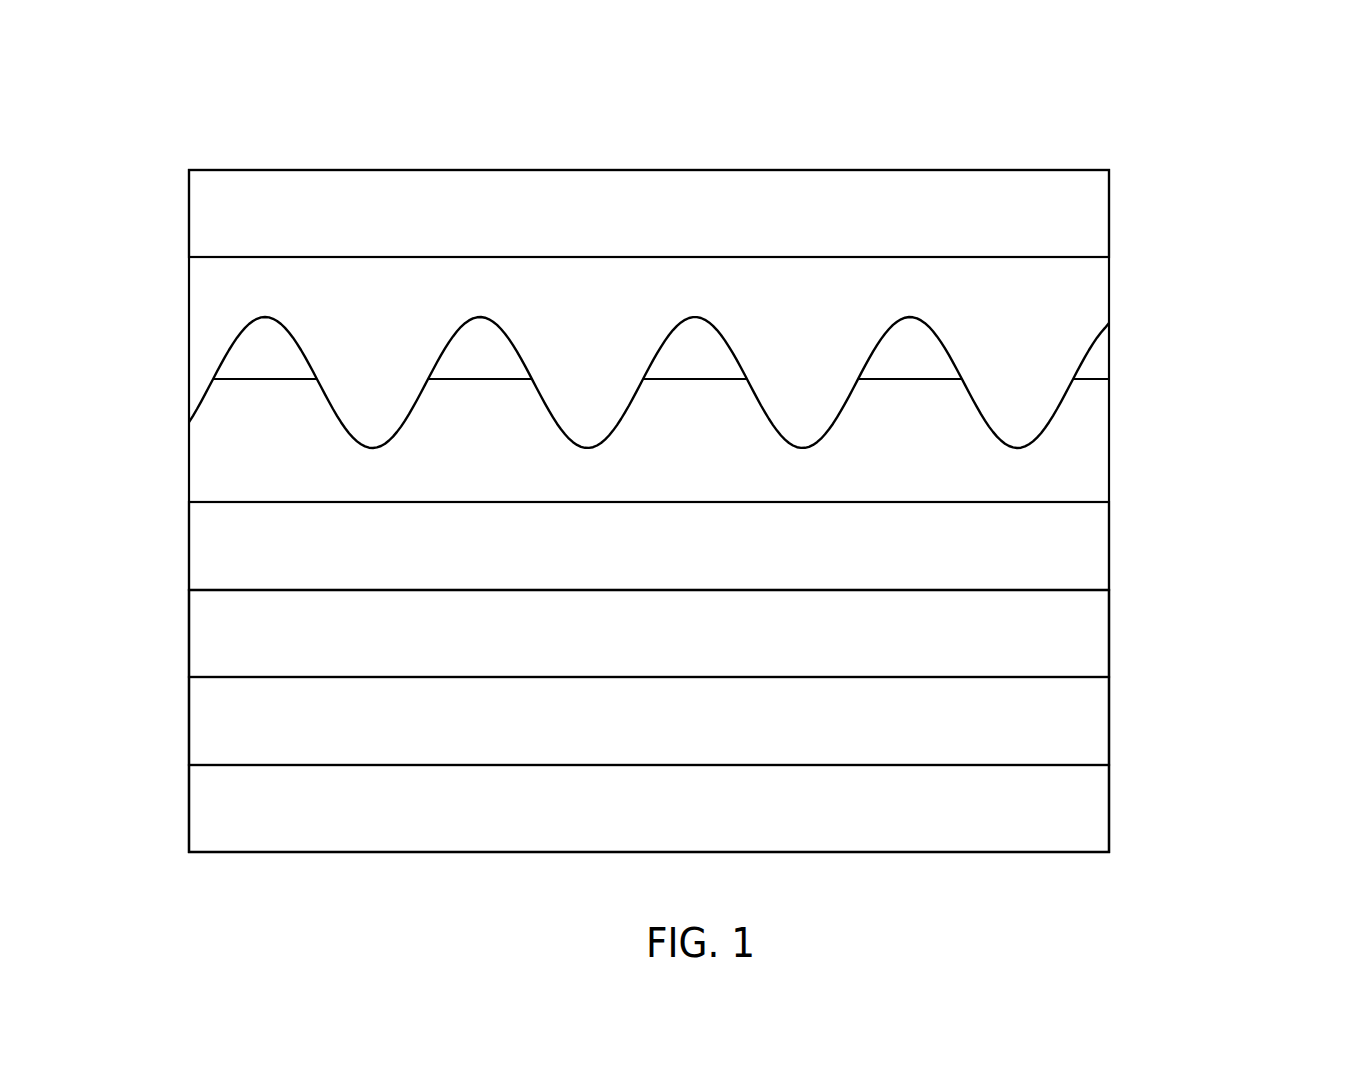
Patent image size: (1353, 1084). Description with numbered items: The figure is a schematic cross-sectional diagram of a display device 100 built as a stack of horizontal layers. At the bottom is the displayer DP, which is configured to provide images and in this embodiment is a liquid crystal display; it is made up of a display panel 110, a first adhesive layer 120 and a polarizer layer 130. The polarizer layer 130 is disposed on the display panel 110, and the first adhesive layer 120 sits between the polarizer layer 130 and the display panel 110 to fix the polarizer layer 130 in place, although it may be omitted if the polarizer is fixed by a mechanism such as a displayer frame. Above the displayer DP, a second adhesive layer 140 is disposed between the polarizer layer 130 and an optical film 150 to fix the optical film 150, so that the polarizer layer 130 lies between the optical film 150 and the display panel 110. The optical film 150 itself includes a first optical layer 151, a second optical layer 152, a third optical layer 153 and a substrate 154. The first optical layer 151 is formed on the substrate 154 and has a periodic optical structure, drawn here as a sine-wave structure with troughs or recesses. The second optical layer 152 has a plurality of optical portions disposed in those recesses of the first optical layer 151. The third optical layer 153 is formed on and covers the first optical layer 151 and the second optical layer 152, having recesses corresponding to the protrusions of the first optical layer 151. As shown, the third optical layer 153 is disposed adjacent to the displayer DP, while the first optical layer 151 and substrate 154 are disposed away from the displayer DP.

The display device 100 is at (208, 72).
The display panel 110 is at (1097, 813).
The first adhesive layer 120 is at (1097, 726).
The polarizer layer 130 is at (1097, 634).
The second adhesive layer 140 is at (1097, 547).
The optical film 150 is at (1217, 203).
The first optical layer 151 is at (1097, 288).
The second optical layer 152 is at (1097, 361).
The third optical layer 153 is at (1097, 433).
The substrate 154 is at (1097, 209).
The displayer DP is at (1217, 625).